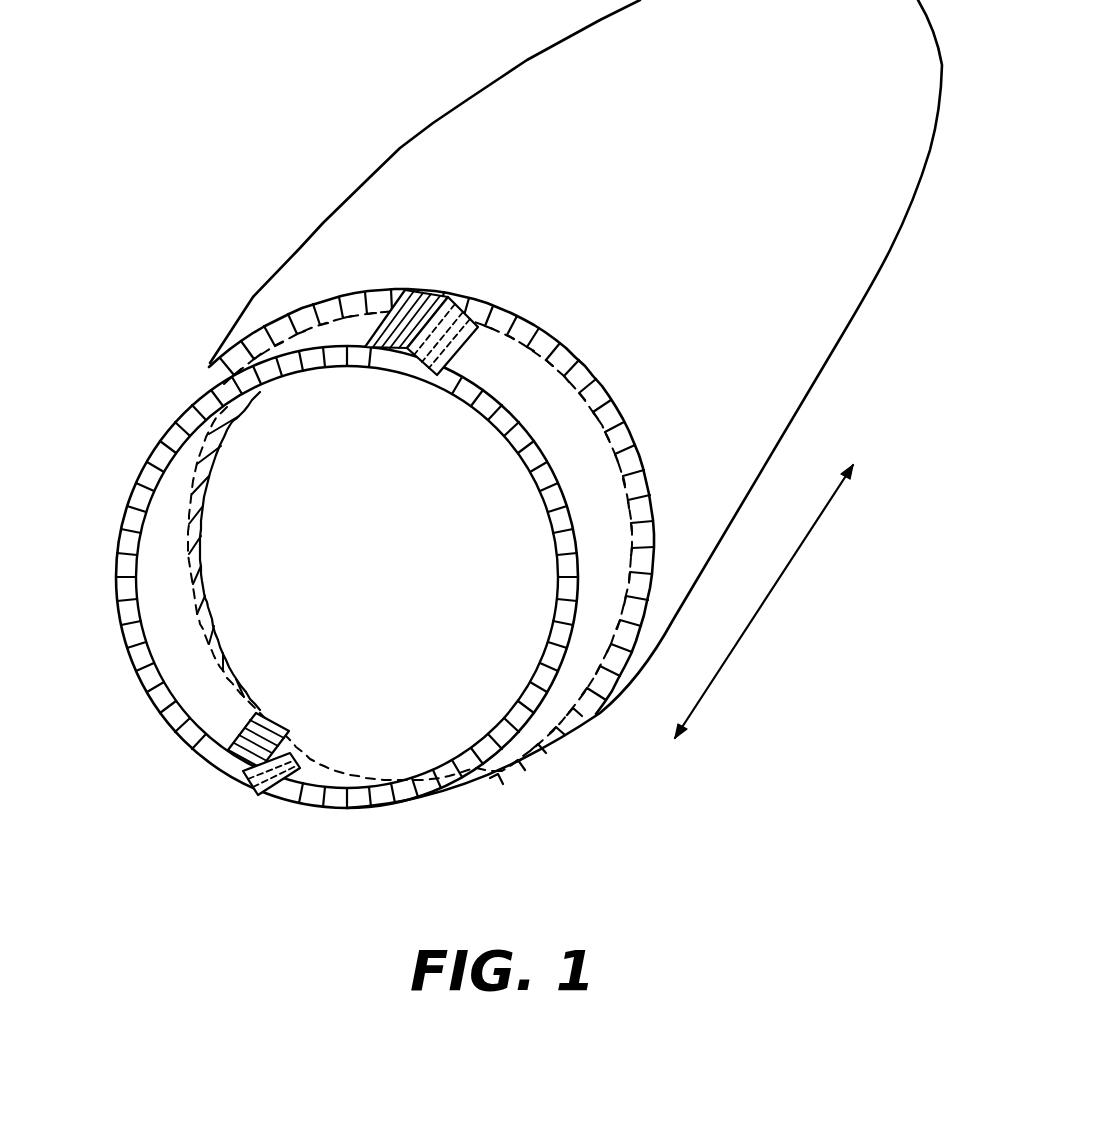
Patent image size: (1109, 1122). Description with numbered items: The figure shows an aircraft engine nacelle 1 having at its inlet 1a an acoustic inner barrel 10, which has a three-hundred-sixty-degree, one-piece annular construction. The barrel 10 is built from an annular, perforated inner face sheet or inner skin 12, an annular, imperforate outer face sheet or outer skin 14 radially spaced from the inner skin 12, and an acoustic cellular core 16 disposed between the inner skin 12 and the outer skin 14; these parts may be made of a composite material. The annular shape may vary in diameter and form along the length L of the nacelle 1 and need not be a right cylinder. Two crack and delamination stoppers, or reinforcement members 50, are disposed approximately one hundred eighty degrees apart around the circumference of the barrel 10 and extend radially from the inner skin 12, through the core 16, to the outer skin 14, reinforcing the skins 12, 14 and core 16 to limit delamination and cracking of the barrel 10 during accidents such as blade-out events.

The aircraft engine nacelle 1 is at (323, 223).
The inlet 1a is at (210, 362).
The acoustic inner barrel 10 is at (166, 412).
The inner skin 12 is at (188, 663).
The outer skin 14 is at (333, 328).
The acoustic cellular core 16 is at (487, 403).
The reinforcement members 50 is at (412, 352).
The length L is at (777, 588).